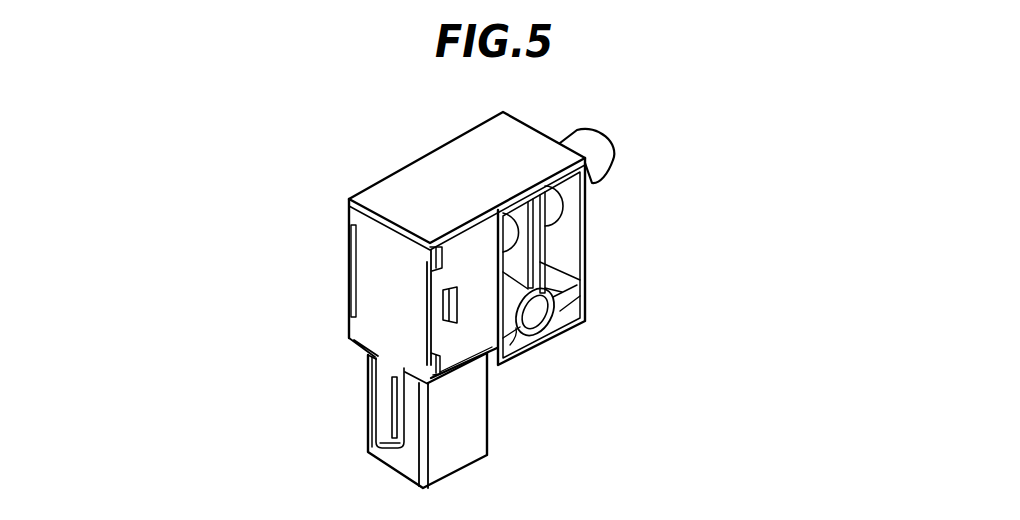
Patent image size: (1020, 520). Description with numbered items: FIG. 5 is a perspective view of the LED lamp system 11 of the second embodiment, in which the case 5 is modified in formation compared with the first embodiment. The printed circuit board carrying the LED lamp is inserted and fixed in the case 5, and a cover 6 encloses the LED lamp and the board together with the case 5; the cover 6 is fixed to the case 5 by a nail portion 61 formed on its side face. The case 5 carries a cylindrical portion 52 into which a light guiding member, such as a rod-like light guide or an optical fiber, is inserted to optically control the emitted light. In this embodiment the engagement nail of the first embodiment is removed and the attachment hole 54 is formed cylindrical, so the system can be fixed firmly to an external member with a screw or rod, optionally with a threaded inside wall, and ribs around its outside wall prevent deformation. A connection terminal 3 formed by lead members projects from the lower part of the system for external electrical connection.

The LED lamp system 11 is at (336, 131).
The cylindrical portion 52 is at (585, 141).
The case 5 is at (585, 262).
The cover 6 is at (387, 305).
The attachment hole 54 is at (543, 318).
The connection terminal 3 is at (392, 415).
The nail portion 61 is at (455, 322).